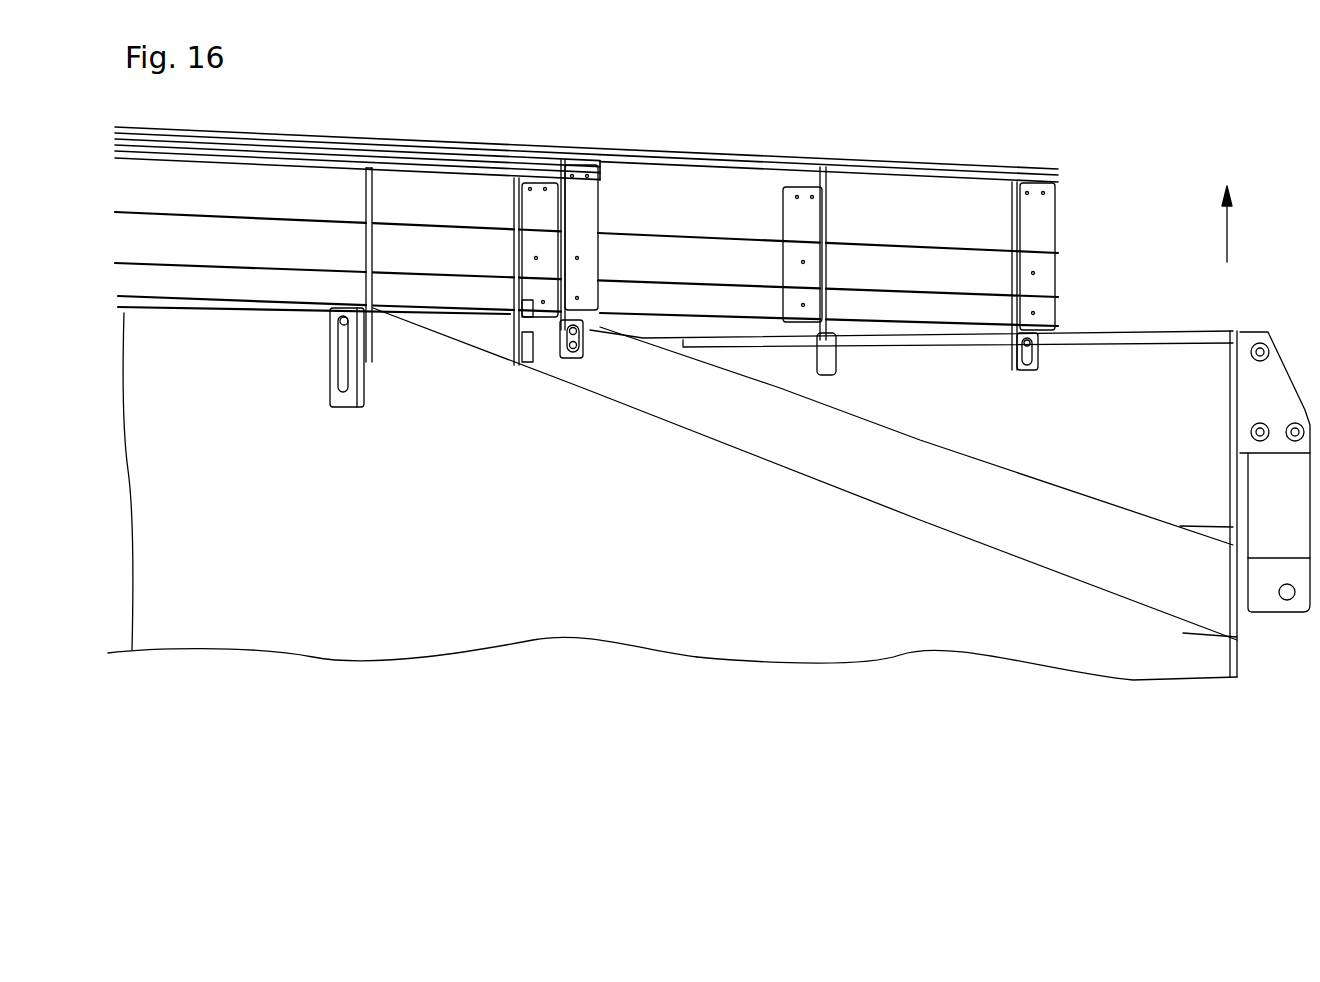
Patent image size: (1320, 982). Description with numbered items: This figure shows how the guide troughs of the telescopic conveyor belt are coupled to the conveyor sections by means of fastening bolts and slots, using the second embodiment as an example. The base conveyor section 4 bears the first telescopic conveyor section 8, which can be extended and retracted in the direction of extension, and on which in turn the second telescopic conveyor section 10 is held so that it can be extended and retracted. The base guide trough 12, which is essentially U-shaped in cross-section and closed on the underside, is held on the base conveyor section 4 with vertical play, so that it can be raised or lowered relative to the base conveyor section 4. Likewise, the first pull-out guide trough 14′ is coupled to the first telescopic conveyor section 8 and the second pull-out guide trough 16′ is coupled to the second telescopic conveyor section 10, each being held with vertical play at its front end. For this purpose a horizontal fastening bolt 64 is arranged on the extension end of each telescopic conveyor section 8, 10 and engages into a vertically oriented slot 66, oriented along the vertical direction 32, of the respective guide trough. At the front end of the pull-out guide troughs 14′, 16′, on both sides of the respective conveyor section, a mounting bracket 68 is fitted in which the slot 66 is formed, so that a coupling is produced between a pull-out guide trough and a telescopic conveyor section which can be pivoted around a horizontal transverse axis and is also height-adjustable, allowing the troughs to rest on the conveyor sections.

The base conveyor section 4 is at (318, 505).
The first telescopic conveyor section 8 is at (773, 430).
The second telescopic conveyor section 10 is at (1105, 473).
The base guide trough 12 is at (297, 197).
The first pull-out guide trough 14′ is at (560, 153).
The second pull-out guide trough 16′ is at (960, 185).
The vertical direction 32 is at (1230, 232).
The fastening bolt 64 is at (343, 318).
The slot 66 is at (340, 365).
The mounting bracket 68 is at (820, 264).